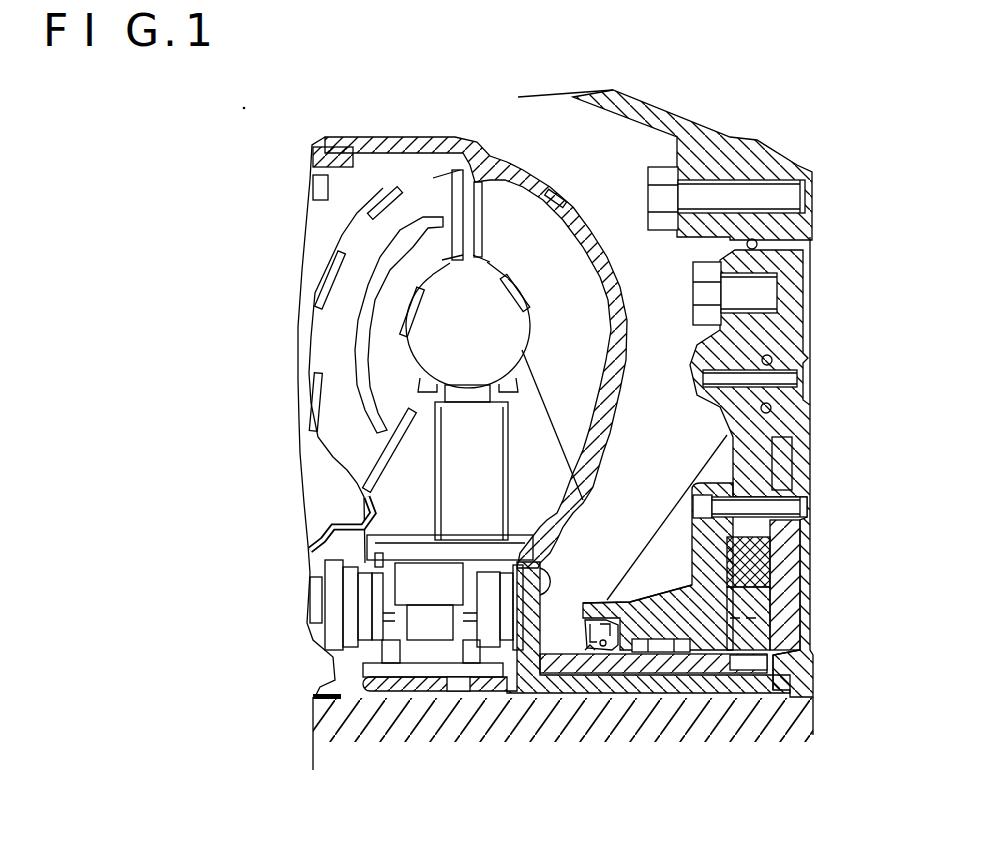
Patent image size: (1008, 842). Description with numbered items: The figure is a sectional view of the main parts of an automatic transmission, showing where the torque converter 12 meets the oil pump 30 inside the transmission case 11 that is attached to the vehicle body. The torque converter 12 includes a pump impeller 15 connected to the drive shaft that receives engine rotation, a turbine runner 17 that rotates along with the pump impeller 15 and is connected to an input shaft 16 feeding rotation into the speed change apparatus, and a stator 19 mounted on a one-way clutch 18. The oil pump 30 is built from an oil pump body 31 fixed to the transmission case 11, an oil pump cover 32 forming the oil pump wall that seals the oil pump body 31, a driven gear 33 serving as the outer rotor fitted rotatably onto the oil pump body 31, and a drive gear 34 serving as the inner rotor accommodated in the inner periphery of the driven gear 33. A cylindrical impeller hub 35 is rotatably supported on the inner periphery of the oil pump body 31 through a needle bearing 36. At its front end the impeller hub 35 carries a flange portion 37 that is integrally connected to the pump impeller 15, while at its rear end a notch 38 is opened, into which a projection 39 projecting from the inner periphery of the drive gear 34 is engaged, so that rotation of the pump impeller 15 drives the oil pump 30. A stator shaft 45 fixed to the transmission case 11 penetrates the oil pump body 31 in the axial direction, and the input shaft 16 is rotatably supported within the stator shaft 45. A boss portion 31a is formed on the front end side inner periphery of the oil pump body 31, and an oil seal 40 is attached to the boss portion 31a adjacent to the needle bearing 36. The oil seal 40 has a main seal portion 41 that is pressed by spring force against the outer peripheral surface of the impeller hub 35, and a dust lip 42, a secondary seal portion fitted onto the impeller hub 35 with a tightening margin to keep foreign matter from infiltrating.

The transmission case 11 is at (773, 163).
The torque converter 12 is at (495, 149).
The pump impeller 15 is at (560, 243).
The input shaft 16 is at (333, 723).
The turbine runner 17 is at (340, 273).
The one-way clutch 18 is at (428, 651).
The stator 19 is at (450, 468).
The oil pump 30 is at (817, 583).
The oil pump body 31 is at (695, 560).
The boss portion 31a is at (618, 599).
The oil pump cover 32 is at (777, 609).
The driven gear 33 is at (753, 543).
The drive gear 34 is at (760, 632).
The impeller hub 35 is at (557, 650).
The needle bearing 36 is at (663, 650).
The flange portion 37 is at (530, 623).
The notch 38 is at (747, 662).
The projection 39 is at (773, 683).
The oil seal 40 is at (596, 654).
The main seal portion 41 is at (610, 652).
The dust lip 42 is at (587, 655).
The stator shaft 45 is at (490, 683).